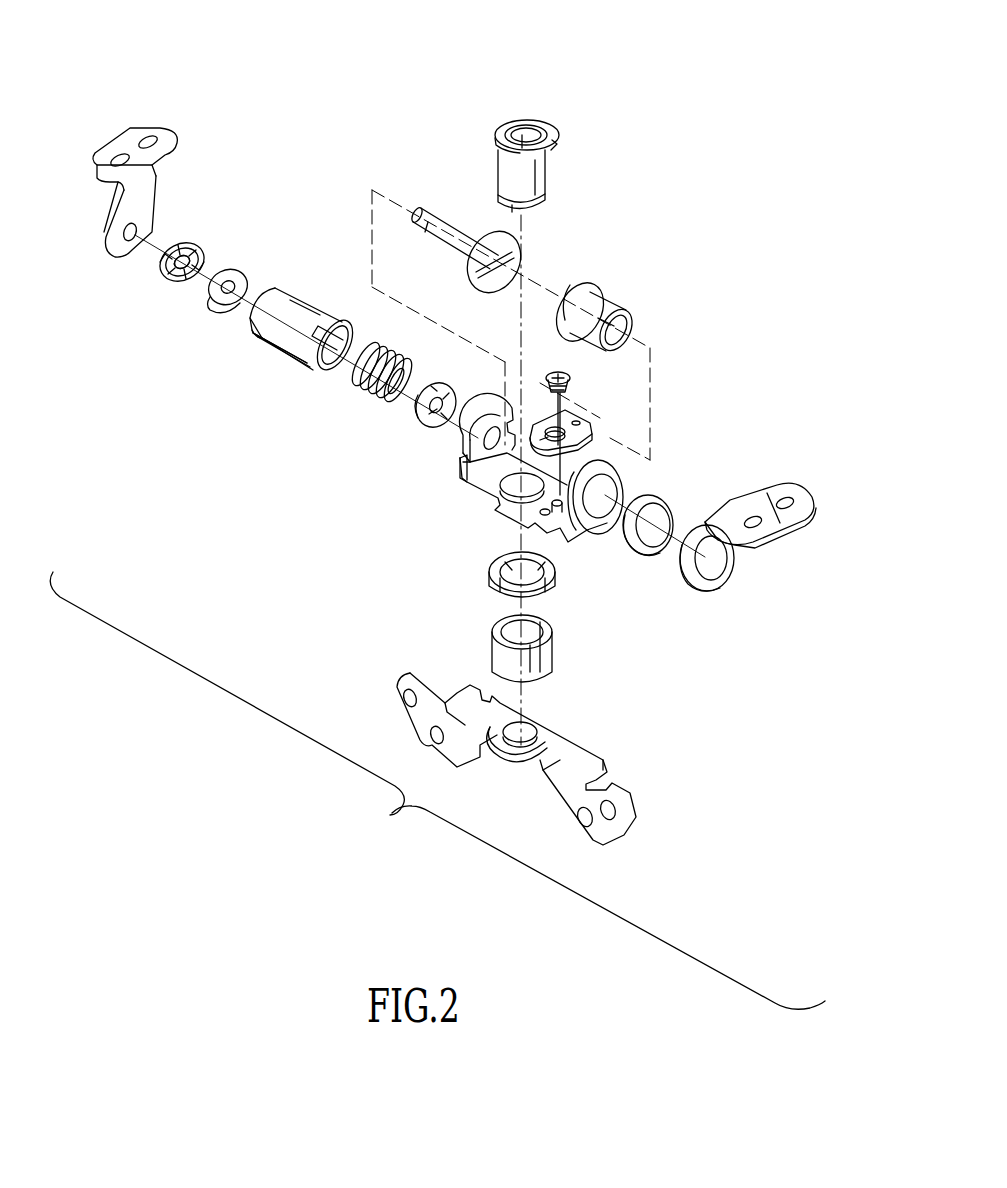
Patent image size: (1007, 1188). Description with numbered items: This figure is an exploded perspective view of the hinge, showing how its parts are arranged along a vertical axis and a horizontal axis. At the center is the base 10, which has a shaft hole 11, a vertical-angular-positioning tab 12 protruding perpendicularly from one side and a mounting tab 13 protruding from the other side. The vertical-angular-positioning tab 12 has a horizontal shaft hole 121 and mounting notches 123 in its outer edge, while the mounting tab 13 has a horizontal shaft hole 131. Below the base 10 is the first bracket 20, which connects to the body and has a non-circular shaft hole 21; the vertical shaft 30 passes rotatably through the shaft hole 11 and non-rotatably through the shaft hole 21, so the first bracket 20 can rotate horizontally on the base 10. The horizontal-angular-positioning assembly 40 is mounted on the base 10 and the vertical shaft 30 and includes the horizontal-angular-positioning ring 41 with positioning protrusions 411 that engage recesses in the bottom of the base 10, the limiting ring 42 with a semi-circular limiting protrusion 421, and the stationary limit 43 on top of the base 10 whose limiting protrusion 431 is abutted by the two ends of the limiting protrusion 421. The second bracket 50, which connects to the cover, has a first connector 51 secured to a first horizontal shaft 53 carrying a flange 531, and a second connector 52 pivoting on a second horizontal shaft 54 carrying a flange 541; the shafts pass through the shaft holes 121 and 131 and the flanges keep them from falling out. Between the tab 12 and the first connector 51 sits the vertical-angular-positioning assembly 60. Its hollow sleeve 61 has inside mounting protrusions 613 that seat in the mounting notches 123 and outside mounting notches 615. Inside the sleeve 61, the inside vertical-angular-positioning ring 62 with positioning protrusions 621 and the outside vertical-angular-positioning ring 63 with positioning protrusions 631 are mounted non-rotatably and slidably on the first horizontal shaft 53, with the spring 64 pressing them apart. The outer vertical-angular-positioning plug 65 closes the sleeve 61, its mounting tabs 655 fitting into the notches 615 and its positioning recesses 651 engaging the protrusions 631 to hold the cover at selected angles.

The base 10 is at (478, 490).
The shaft hole 11 is at (517, 493).
The vertical-angular-positioning tab 12 is at (470, 440).
The shaft hole 121 is at (493, 428).
The mounting notches 123 is at (463, 467).
The mounting tab 13 is at (605, 468).
The shaft hole 131 is at (608, 488).
The first bracket 20 is at (580, 755).
The shaft hole 21 is at (533, 736).
The vertical shaft 30 is at (546, 172).
The horizontal-angular-positioning assembly 40 is at (625, 628).
The horizontal-angular-positioning ring 41 is at (548, 590).
The positioning protrusions 411 is at (495, 562).
The limiting ring 42 is at (502, 128).
The limiting protrusion 421 is at (545, 125).
The stationary limit 43 is at (585, 422).
The limiting protrusion 431 is at (566, 400).
The second bracket 50 is at (175, 125).
The first connector 51 is at (116, 250).
The second connector 52 is at (735, 548).
The first horizontal shaft 53 is at (445, 235).
The flange 531 is at (495, 232).
The second horizontal shaft 54 is at (612, 300).
The flange 541 is at (595, 282).
The vertical-angular-positioning assembly 60 is at (300, 255).
The sleeve 61 is at (280, 345).
The inside mounting protrusions 613 is at (295, 360).
The outside mounting notches 615 is at (255, 330).
The inside vertical-angular-positioning ring 62 is at (420, 410).
The positioning protrusions 621 is at (432, 386).
The outside vertical-angular-positioning ring 63 is at (225, 270).
The positioning protrusions 631 is at (225, 294).
The spring 64 is at (373, 345).
The outer vertical-angular-positioning plug 65 is at (175, 245).
The positioning recesses 651 is at (181, 268).
The mounting tabs 655 is at (165, 270).